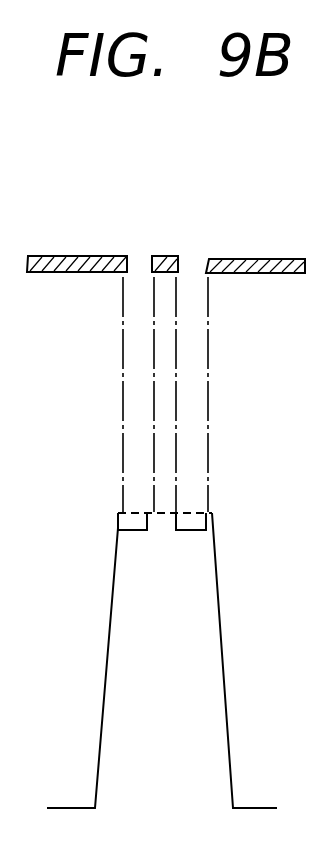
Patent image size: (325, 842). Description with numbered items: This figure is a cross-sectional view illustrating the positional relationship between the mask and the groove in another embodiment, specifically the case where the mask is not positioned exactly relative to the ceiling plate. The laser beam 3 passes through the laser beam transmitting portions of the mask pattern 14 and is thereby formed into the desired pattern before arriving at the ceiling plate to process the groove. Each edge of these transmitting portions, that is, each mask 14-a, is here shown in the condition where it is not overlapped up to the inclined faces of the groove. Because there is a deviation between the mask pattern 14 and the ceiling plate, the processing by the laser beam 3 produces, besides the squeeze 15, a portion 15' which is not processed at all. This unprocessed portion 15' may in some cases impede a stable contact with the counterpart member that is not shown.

The laser beam 3 is at (138, 252).
The mask pattern 14 is at (197, 262).
The mask 14-a is at (206, 273).
The squeeze 15 is at (195, 493).
The unprocessed portion 15' is at (206, 515).